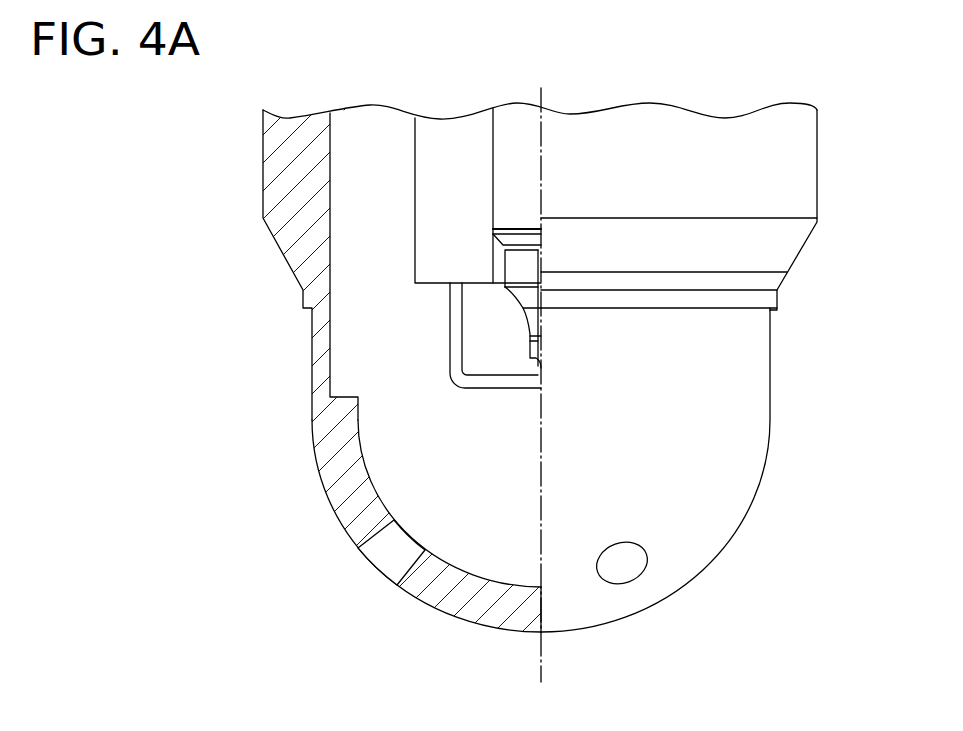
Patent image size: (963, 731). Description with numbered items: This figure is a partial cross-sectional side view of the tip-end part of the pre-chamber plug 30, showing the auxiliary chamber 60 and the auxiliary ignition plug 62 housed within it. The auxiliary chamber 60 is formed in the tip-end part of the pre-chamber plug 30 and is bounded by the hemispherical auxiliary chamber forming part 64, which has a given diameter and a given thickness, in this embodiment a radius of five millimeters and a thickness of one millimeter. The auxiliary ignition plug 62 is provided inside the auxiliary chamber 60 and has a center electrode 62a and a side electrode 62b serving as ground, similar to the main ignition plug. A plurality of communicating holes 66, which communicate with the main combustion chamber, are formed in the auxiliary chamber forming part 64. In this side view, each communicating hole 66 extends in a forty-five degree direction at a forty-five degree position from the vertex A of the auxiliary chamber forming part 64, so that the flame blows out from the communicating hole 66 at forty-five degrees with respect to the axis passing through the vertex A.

The pre-chamber plug 30 is at (822, 80).
The auxiliary chamber 60 is at (380, 443).
The auxiliary ignition plug 62 is at (517, 98).
The center electrode 62a is at (545, 372).
The side electrode 62b is at (497, 389).
The auxiliary chamber forming part 64 is at (433, 607).
The communicating hole 66 is at (372, 541).
The vertex A is at (540, 638).